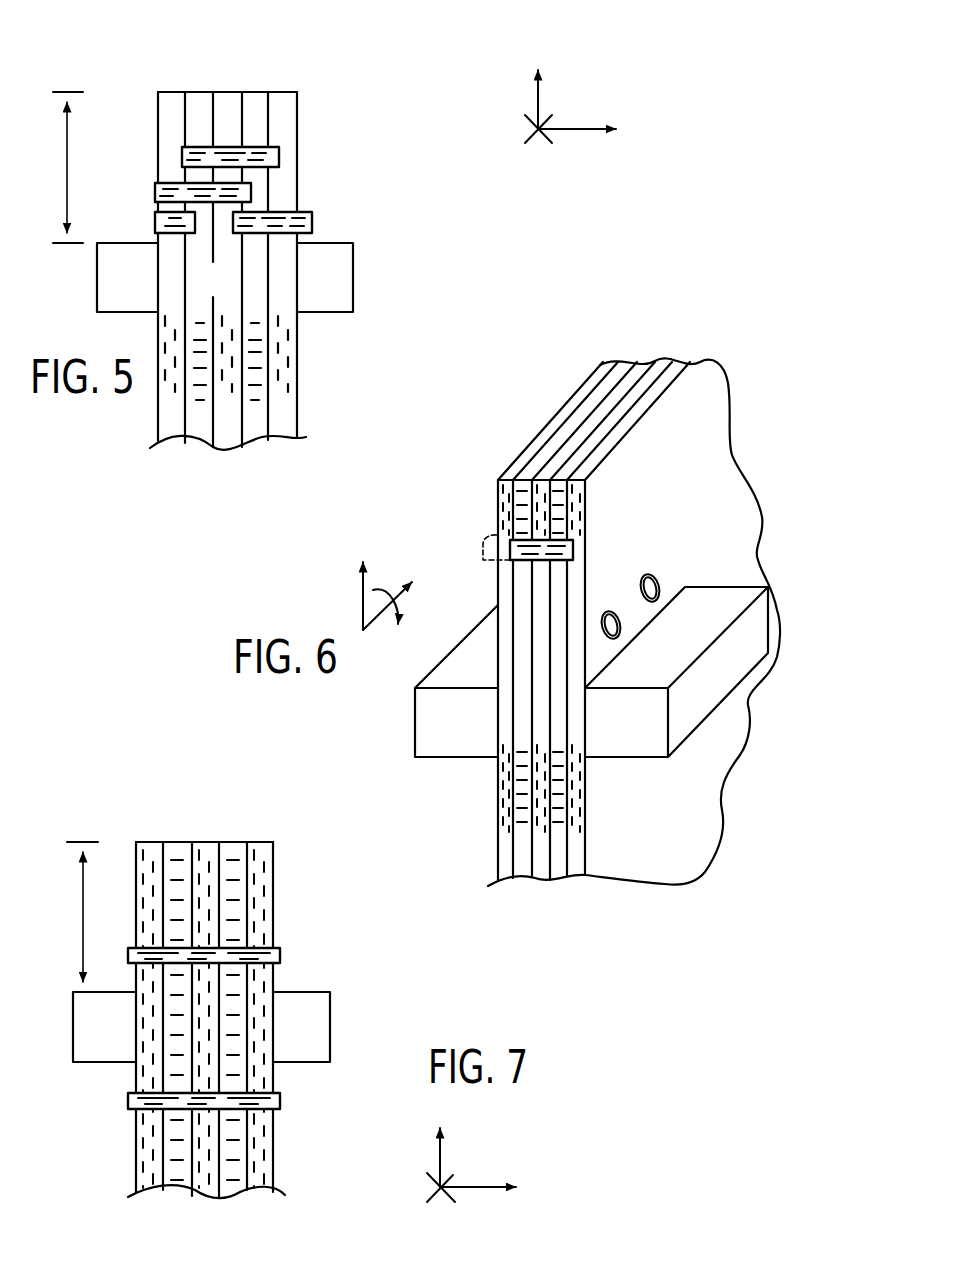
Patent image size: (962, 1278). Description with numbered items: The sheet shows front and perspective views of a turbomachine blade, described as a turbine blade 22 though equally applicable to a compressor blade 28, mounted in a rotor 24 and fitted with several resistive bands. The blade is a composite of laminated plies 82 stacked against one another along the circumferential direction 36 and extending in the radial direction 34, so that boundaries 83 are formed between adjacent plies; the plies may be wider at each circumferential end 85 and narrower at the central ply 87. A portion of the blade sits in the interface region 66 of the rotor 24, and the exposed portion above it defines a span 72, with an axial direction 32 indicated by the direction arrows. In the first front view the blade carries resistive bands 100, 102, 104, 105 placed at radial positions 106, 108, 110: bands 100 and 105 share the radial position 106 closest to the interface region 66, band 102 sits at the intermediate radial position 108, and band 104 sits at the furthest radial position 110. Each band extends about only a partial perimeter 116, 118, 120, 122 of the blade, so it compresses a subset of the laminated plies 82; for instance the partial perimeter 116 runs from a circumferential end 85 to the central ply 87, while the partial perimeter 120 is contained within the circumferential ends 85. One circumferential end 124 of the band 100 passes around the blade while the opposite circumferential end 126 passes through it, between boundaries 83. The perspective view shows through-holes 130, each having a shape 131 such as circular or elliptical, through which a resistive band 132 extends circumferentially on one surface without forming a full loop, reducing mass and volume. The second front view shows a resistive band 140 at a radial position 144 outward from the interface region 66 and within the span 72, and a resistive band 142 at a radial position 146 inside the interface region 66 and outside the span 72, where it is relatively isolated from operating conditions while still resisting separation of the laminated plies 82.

In FIG. 5, the turbine blade 22 is at (277, 241).
In FIG. 6, the turbine blade 22 is at (645, 594).
In FIG. 7, the turbine blade 22 is at (206, 993).
In FIG. 5, the compressor blade 28 is at (305, 72).
In FIG. 6, the compressor blade 28 is at (702, 346).
In FIG. 7, the compressor blade 28 is at (142, 826).
In FIG. 5, the rotor 24 is at (225, 277).
In FIG. 6, the rotor 24 is at (689, 707).
In FIG. 7, the rotor 24 is at (201, 1027).
In FIG. 5, the axial direction 32 is at (535, 140).
In FIG. 6, the axial direction 32 is at (385, 606).
In FIG. 7, the axial direction 32 is at (437, 1197).
In FIG. 5, the radial direction 34 is at (538, 101).
In FIG. 7, the radial direction 34 is at (440, 1160).
In FIG. 5, the circumferential direction 36 is at (590, 131).
In FIG. 6, the circumferential direction 36 is at (387, 606).
In FIG. 7, the circumferential direction 36 is at (492, 1190).
In FIG. 7, the interface region 66 is at (312, 1155).
In FIG. 5, the span 72 is at (65, 170).
In FIG. 7, the span 72 is at (81, 930).
In FIG. 5, the laminated plies 82 is at (250, 445).
In FIG. 6, the laminated plies 82 is at (580, 875).
In FIG. 7, the laminated plies 82 is at (225, 1197).
In FIG. 5, the boundaries 83 is at (212, 440).
In FIG. 5, the circumferential end 85 is at (158, 125).
In FIG. 5, the central ply 87 is at (228, 140).
In FIG. 5, the resistive band 100 is at (312, 218).
In FIG. 5, the resistive band 102 is at (155, 190).
In FIG. 5, the resistive band 104 is at (280, 157).
In FIG. 5, the resistive band 105 is at (155, 221).
In FIG. 5, the radial position 106 is at (400, 228).
In FIG. 5, the radial position 108 is at (380, 192).
In FIG. 5, the radial position 110 is at (374, 152).
In FIG. 5, the partial perimeter 116 is at (305, 203).
In FIG. 5, the partial perimeter 118 is at (154, 179).
In FIG. 6, the partial perimeter 118 is at (523, 534).
In FIG. 5, the partial perimeter 120 is at (228, 141).
In FIG. 5, the partial perimeter 122 is at (149, 207).
In FIG. 5, the circumferential end of resistive band 124 is at (318, 235).
In FIG. 5, the circumferential end of resistive band 126 is at (226, 228).
In FIG. 6, the through-holes 130 is at (605, 612).
In FIG. 6, the shape 131 is at (630, 636).
In FIG. 5, the resistive band 132 is at (257, 147).
In FIG. 6, the resistive band 132 is at (510, 552).
In FIG. 7, the resistive band 140 is at (278, 948).
In FIG. 7, the resistive band 142 is at (278, 1093).
In FIG. 7, the radial position 144 is at (324, 955).
In FIG. 7, the radial position 146 is at (322, 1100).